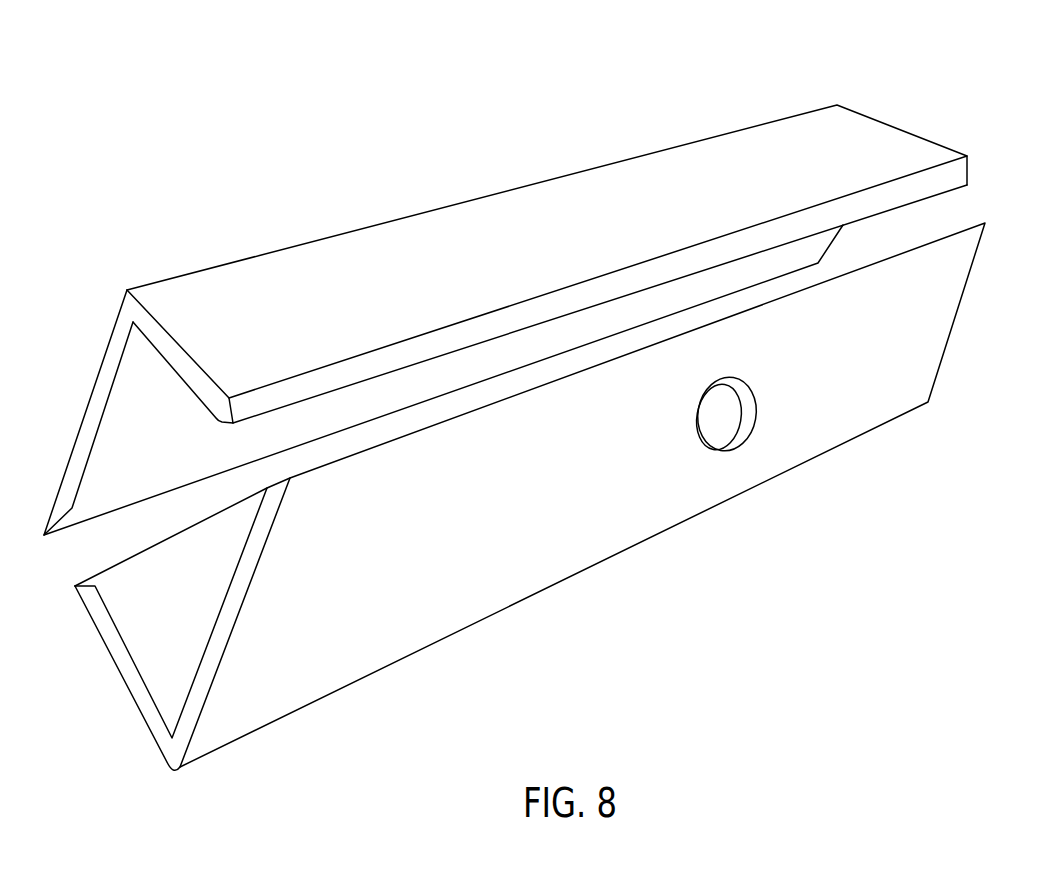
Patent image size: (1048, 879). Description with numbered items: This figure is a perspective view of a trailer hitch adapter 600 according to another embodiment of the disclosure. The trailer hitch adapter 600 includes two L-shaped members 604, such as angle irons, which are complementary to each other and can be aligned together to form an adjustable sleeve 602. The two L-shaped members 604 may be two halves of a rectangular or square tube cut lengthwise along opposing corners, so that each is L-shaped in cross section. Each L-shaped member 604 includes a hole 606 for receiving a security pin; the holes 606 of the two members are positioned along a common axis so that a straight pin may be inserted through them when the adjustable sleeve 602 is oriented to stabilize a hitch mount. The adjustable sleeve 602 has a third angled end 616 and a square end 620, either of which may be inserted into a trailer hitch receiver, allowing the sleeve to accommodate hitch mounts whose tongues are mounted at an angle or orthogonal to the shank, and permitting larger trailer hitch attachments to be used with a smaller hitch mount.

The trailer hitch adapter 600 is at (303, 90).
The adjustable sleeve 602 is at (106, 235).
The L-shaped member 604 is at (872, 142).
The hole 606 is at (728, 442).
The third angled end 616 is at (100, 388).
The square end 620 is at (975, 259).